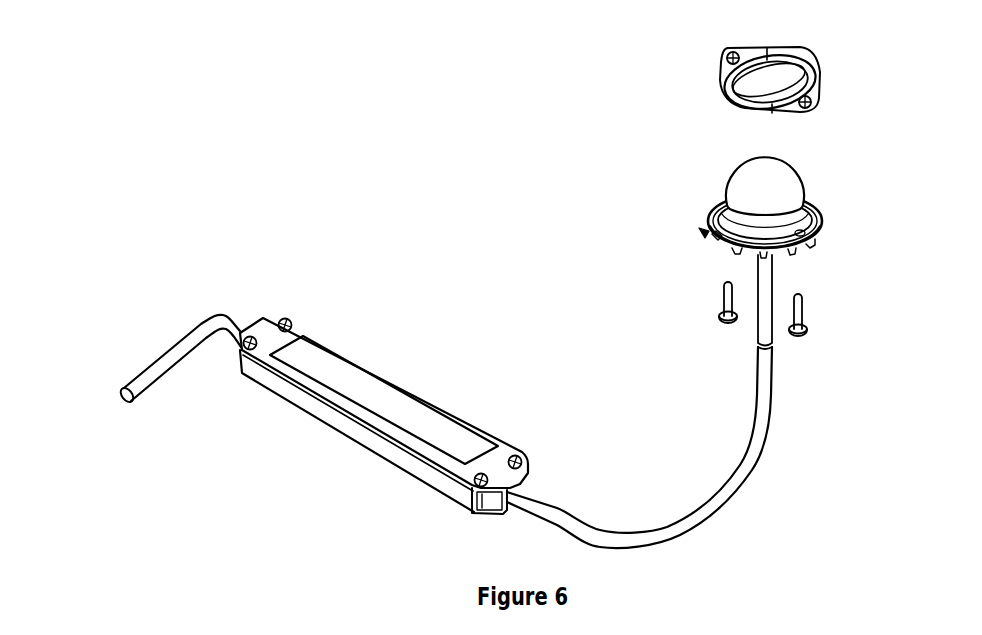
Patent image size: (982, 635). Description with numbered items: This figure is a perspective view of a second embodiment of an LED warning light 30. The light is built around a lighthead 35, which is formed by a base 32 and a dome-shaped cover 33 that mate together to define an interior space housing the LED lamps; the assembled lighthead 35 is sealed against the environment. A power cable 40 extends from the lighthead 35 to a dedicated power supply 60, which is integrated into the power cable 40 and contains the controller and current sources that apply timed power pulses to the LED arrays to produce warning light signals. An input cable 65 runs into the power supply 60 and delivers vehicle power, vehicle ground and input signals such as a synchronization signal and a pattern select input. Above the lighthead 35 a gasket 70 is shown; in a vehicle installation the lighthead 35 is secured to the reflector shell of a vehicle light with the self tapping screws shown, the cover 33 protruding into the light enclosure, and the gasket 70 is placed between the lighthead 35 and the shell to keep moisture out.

The LED warning light 30 is at (703, 47).
The base 32 is at (703, 234).
The dome-shaped cover 33 is at (734, 173).
The lighthead 35 is at (808, 173).
The power cable 40 is at (740, 462).
The power supply 60 is at (403, 377).
The input cable 65 is at (158, 388).
The gasket 70 is at (735, 45).